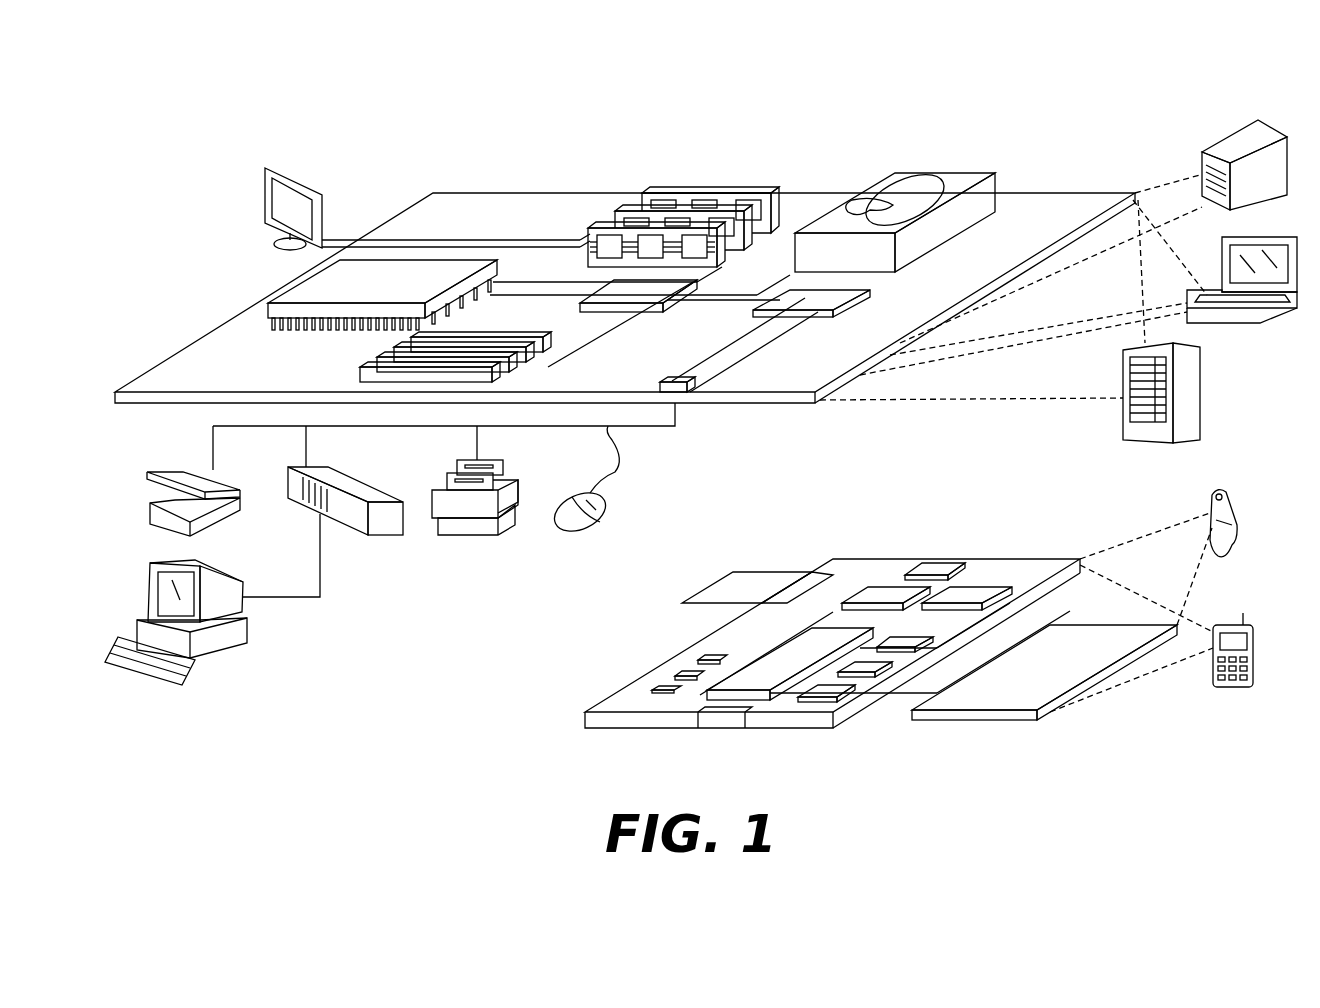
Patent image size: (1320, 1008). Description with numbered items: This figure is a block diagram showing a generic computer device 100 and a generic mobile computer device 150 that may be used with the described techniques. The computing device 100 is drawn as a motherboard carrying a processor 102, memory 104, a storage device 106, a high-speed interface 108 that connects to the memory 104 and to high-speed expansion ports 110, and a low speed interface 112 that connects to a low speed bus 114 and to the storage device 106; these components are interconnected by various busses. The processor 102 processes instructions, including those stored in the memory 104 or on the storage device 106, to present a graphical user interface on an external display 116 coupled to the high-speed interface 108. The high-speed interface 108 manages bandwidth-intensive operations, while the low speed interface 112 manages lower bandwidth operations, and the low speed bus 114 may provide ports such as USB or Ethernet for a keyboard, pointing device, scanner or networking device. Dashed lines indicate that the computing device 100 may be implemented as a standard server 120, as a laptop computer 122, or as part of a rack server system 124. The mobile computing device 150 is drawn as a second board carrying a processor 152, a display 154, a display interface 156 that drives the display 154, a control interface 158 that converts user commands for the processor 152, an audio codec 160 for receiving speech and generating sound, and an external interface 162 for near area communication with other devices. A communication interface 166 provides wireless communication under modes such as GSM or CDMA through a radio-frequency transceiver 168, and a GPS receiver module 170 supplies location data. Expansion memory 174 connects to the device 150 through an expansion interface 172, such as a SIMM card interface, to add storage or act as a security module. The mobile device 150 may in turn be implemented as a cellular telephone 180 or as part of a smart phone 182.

The computing device 100 is at (392, 148).
The processor 102 is at (290, 283).
The memory 104 is at (712, 188).
The storage device 106 is at (932, 170).
The high-speed interface 108 is at (650, 290).
The high-speed expansion ports 110 is at (382, 352).
The low speed interface 112 is at (788, 298).
The low speed bus 114 is at (677, 378).
The display 116 is at (268, 163).
The standard server 120 is at (1222, 147).
The laptop computer 122 is at (1272, 233).
The rack server system 124 is at (1200, 393).
The mobile computer device 150 is at (545, 733).
The processor 152 is at (760, 665).
The display 154 is at (1081, 638).
The display interface 156 is at (835, 692).
The control interface 158 is at (872, 664).
The audio codec 160 is at (907, 633).
The external interface 162 is at (724, 714).
The communication interface 166 is at (887, 588).
The transceiver 168 is at (972, 590).
The GPS receiver module 170 is at (932, 568).
The expansion interface 172 is at (815, 568).
The expansion memory 174 is at (735, 570).
The cellular telephone 180 is at (1217, 490).
The smart phone 182 is at (1228, 623).